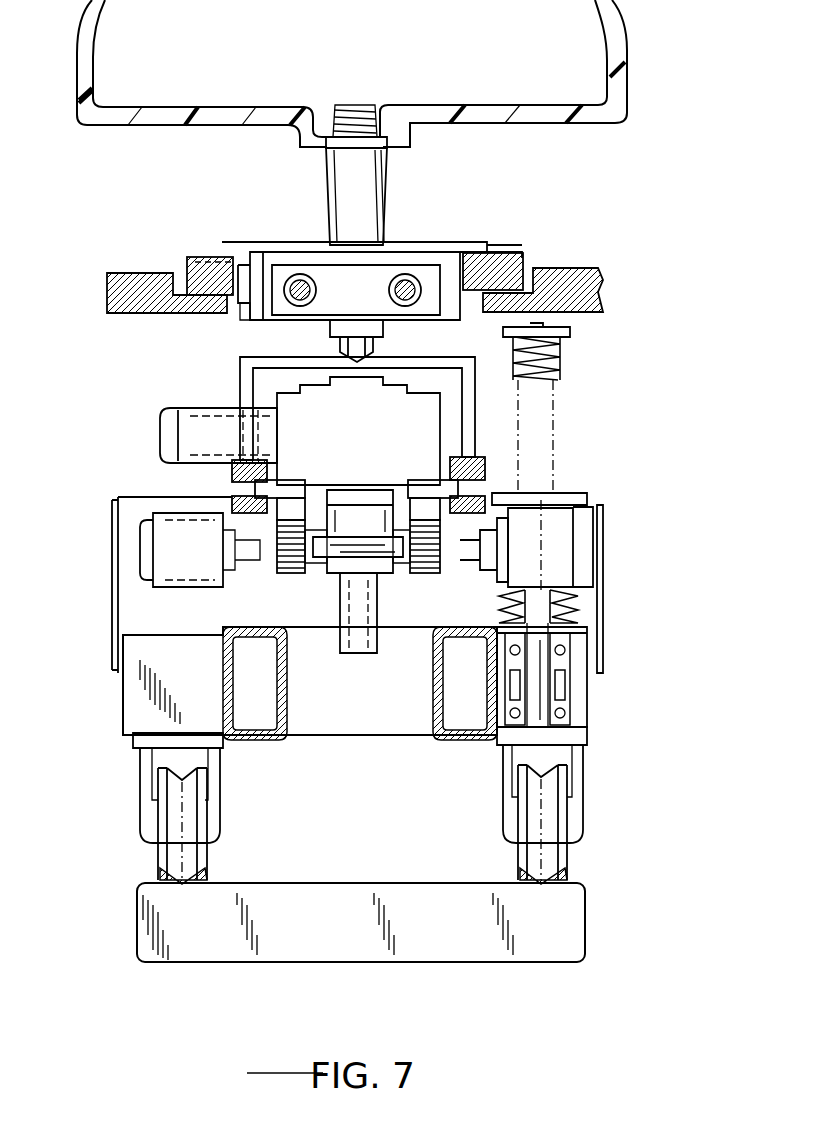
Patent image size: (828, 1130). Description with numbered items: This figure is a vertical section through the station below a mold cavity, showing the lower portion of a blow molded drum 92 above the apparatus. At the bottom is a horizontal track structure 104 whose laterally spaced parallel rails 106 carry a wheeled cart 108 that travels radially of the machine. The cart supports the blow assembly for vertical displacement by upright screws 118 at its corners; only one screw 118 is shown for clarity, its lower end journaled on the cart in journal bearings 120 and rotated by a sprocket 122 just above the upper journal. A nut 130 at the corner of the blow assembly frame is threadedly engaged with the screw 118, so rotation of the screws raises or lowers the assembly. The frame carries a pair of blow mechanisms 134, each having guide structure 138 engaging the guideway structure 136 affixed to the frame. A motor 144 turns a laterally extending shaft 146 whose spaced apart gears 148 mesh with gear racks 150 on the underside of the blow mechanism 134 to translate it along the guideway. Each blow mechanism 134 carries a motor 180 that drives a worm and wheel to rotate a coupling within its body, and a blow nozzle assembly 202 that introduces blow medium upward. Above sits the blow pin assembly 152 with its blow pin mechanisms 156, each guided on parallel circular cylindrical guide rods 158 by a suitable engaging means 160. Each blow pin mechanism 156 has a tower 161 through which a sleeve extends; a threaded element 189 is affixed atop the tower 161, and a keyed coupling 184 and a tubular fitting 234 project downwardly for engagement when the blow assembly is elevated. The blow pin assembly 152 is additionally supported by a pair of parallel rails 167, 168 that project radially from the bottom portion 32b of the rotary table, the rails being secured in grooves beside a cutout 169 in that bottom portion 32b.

The drum 92 is at (627, 77).
The threaded element 189 is at (357, 105).
The tower 161 is at (345, 180).
The blow pin mechanism 156 is at (388, 172).
The blow pin assembly 152 is at (465, 242).
The guide rods 158 is at (299, 283).
The means for engaging the guide rods 160 is at (300, 316).
The keyed coupling 184 is at (382, 330).
The fitting 234 is at (340, 345).
The rail 167 is at (196, 268).
The cutout 169 is at (235, 315).
The rail 168 is at (515, 265).
The bottom portion of table 32b is at (603, 287).
The blow mechanism 134 is at (440, 410).
The motor 180 is at (200, 420).
The guideway structure 136 is at (235, 490).
The guide structure 138 is at (420, 478).
The gear rack 150 is at (298, 496).
The gears 148 is at (290, 575).
The shaft 146 is at (396, 596).
The blow nozzle assembly 202 is at (335, 598).
The motor 144 is at (190, 565).
The nut 130 is at (565, 527).
The screw 118 is at (565, 452).
The sprocket 122 is at (580, 605).
The journal bearings 120 is at (570, 640).
The cart 108 is at (338, 720).
The rails 106 is at (205, 875).
The track structure 104 is at (586, 922).